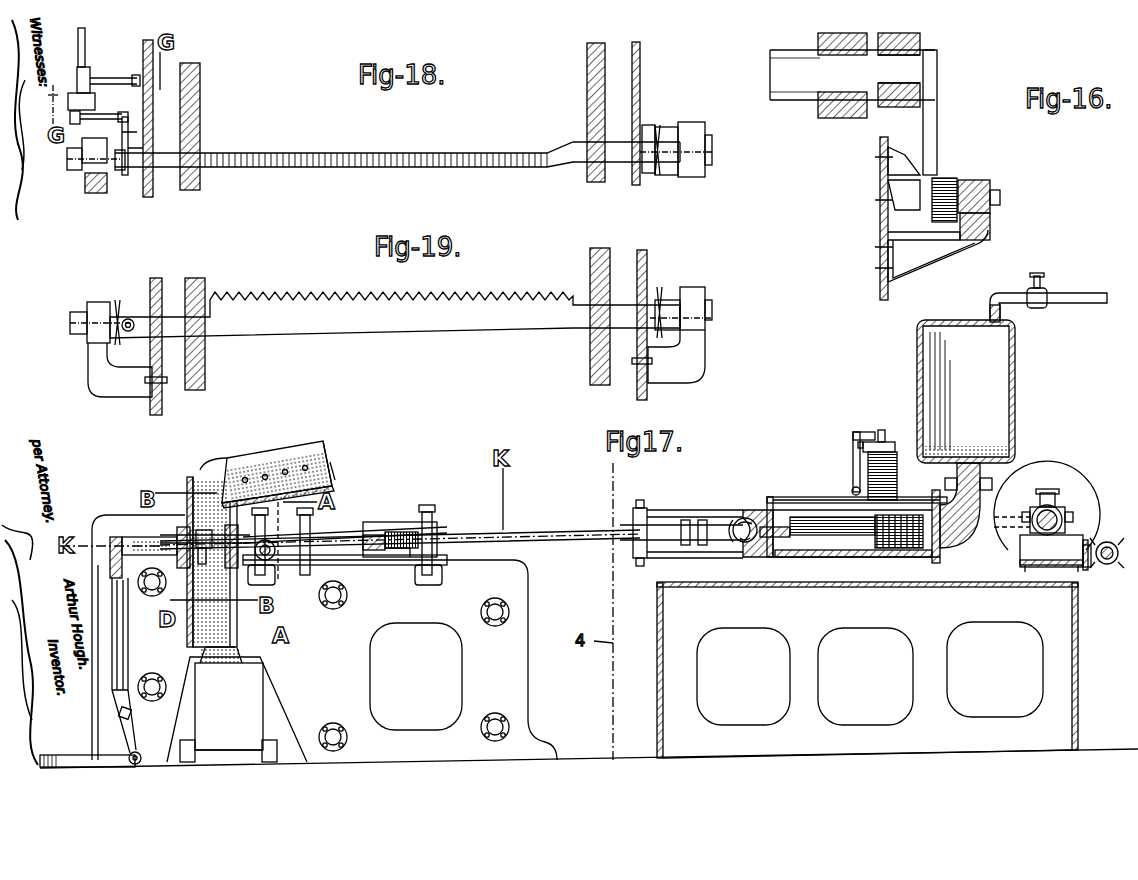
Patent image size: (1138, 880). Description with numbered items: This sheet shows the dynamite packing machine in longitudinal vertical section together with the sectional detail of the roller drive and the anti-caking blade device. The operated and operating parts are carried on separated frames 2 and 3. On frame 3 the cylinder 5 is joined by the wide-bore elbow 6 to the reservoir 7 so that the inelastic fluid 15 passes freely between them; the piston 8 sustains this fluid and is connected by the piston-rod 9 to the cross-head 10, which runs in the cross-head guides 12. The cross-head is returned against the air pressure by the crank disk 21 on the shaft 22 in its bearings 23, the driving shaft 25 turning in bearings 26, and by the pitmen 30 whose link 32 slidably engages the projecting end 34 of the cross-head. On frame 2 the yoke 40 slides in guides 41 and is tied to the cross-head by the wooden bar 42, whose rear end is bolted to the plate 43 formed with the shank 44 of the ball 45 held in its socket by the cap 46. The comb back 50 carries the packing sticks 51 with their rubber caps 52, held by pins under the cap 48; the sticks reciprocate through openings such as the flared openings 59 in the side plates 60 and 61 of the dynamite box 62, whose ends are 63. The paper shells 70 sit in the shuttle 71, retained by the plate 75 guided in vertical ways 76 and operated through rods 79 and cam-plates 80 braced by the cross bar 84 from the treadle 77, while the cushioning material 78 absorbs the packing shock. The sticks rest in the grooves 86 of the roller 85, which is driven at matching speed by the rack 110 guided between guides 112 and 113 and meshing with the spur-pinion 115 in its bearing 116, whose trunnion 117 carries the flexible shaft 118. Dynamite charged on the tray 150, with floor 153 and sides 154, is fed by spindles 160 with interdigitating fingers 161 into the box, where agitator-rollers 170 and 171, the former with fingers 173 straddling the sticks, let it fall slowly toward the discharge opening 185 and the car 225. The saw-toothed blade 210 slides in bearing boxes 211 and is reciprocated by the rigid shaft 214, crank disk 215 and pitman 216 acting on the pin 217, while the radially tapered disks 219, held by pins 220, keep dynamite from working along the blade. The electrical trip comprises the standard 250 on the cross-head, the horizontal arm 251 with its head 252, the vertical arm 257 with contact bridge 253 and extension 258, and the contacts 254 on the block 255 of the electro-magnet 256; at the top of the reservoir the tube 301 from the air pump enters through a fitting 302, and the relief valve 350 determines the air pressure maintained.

In FIG. 18, the frame 2 is at (160, 193).
In FIG. 19, the frame 2 is at (156, 278).
In FIG. 17, the frame 2 is at (324, 637).
In FIG. 16, the frame 3 is at (880, 225).
In FIG. 17, the frame 3 is at (867, 670).
In FIG. 17, the cylinder 5 is at (860, 560).
In FIG. 17, the elbow 6 is at (1005, 490).
In FIG. 17, the reservoir 7 is at (1000, 366).
In FIG. 17, the piston 8 is at (908, 560).
In FIG. 17, the piston-rod 9 is at (812, 560).
In FIG. 16, the cross-head 10 is at (785, 100).
In FIG. 17, the cross-head 10 is at (757, 560).
In FIG. 16, the cross-head guides 12 is at (828, 33).
In FIG. 17, the cross-head guides 12 is at (660, 510).
In FIG. 17, the inelastic fluid 15 is at (978, 446).
In FIG. 17, the crank disk 21 is at (1060, 490).
In FIG. 17, the shaft 22 is at (1060, 508).
In FIG. 17, the bearings 23 is at (1030, 567).
In FIG. 17, the driving shaft 25 is at (1100, 572).
In FIG. 17, the bearings 26 is at (1112, 542).
In FIG. 17, the pitmen 30 is at (958, 560).
In FIG. 16, the link 32 is at (900, 33).
In FIG. 16, the projecting end of cross-head 34 is at (893, 112).
In FIG. 17, the yoke 40 is at (405, 522).
In FIG. 17, the guides 41 is at (355, 530).
In FIG. 17, the wooden bar 42 is at (545, 530).
In FIG. 17, the plate 43 is at (686, 560).
In FIG. 17, the shank 44 is at (705, 560).
In FIG. 17, the ball 45 is at (738, 522).
In FIG. 17, the cap 46 is at (728, 535).
In FIG. 17, the cap 48 is at (390, 522).
In FIG. 17, the back 50 is at (385, 557).
In FIG. 17, the packing sticks 51 is at (372, 535).
In FIG. 17, the rubber caps 52 is at (238, 538).
In FIG. 17, the openings 59 is at (183, 527).
In FIG. 17, the side plate 60 is at (238, 560).
In FIG. 17, the side plate 61 is at (195, 565).
In FIG. 17, the dynamite box 62 is at (235, 622).
In FIG. 18, the ends of dynamite box 63 is at (200, 104).
In FIG. 19, the ends of dynamite box 63 is at (205, 282).
In FIG. 17, the paper shells 70 is at (143, 540).
In FIG. 17, the shuttle 71 is at (116, 537).
In FIG. 17, the retaining plate 75 is at (110, 545).
In FIG. 17, the vertical ways 76 is at (113, 640).
In FIG. 17, the treadle 77 is at (65, 755).
In FIG. 17, the cushioning material 78 is at (110, 563).
In FIG. 17, the rods 79 is at (124, 652).
In FIG. 17, the cam-plates 80 is at (138, 752).
In FIG. 17, the cross bar 84 is at (130, 713).
In FIG. 17, the roller 85 is at (272, 558).
In FIG. 17, the grooves 86 is at (345, 554).
In FIG. 16, the rack 110 is at (950, 178).
In FIG. 16, the guide 112 is at (900, 165).
In FIG. 16, the guide 113 is at (924, 210).
In FIG. 16, the spur-pinion 115 is at (940, 222).
In FIG. 16, the bearing 116 is at (990, 230).
In FIG. 16, the trunnion 117 is at (990, 185).
In FIG. 16, the flexible shaft 118 is at (1000, 197).
In FIG. 17, the hopper or tray 150 is at (290, 445).
In FIG. 17, the floor 153 is at (333, 487).
In FIG. 17, the sides 154 is at (330, 445).
In FIG. 17, the spindles 160 is at (334, 466).
In FIG. 17, the interdigitating fingers 161 is at (250, 470).
In FIG. 17, the agitator-roller 170 is at (190, 480).
In FIG. 17, the agitator-roller 171 is at (205, 645).
In FIG. 17, the fingers 173 is at (197, 470).
In FIG. 17, the discharge opening 185 is at (242, 648).
In FIG. 18, the saw-toothed blade 210 is at (418, 153).
In FIG. 19, the saw-toothed blade 210 is at (315, 292).
In FIG. 18, the bearing boxes 211 is at (82, 172).
In FIG. 19, the bearing boxes 211 is at (87, 312).
In FIG. 18, the rigid shaft 214 is at (85, 48).
In FIG. 18, the crank disk 215 is at (86, 98).
In FIG. 18, the pitman 216 is at (97, 116).
In FIG. 18, the pin 217 is at (128, 132).
In FIG. 19, the pin 217 is at (128, 319).
In FIG. 18, the radially tapered disks 219 is at (118, 178).
In FIG. 19, the radially tapered disks 219 is at (105, 350).
In FIG. 18, the pins 220 is at (668, 170).
In FIG. 19, the pins 220 is at (662, 325).
In FIG. 17, the car 225 is at (237, 709).
In FIG. 17, the standard 250 is at (768, 500).
In FIG. 17, the horizontal arm 251 is at (805, 497).
In FIG. 17, the head 252 is at (763, 508).
In FIG. 17, the contact bridge 253 is at (858, 432).
In FIG. 17, the contacts 254 is at (882, 430).
In FIG. 17, the block 255 is at (895, 444).
In FIG. 17, the electro-magnet 256 is at (897, 465).
In FIG. 17, the vertical arm 257 is at (852, 490).
In FIG. 17, the extension 258 is at (856, 444).
In FIG. 17, the tube 301 is at (996, 293).
In FIG. 17, the fitting 302 is at (1000, 316).
In FIG. 17, the relief valve 350 is at (1047, 305).